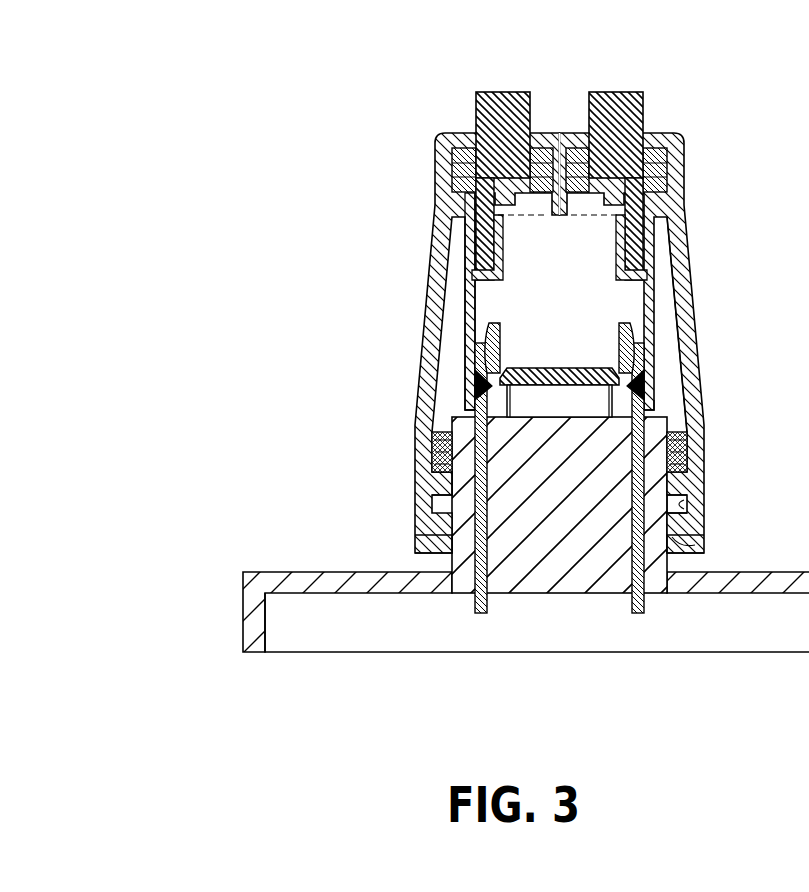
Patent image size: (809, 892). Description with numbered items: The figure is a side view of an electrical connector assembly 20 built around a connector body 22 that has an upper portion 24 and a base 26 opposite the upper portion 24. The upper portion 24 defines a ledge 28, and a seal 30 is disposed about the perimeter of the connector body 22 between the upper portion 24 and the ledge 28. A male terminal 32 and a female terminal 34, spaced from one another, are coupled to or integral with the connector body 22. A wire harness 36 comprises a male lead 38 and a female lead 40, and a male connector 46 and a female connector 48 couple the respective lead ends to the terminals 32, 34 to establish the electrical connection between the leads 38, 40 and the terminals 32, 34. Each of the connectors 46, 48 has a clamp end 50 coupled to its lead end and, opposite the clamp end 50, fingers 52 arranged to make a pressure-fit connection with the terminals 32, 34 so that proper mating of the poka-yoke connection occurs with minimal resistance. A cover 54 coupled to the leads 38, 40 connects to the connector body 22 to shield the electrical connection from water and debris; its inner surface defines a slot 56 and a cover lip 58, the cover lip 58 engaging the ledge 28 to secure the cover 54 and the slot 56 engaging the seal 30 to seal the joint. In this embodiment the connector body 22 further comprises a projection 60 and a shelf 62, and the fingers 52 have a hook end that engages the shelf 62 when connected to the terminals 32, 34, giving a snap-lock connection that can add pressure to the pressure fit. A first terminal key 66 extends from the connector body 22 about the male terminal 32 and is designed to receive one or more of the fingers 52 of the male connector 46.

The electrical connector assembly 20 is at (160, 117).
The connector body 22 is at (548, 552).
The upper portion 24 is at (670, 457).
The base 26 is at (585, 567).
The ledge 28 is at (440, 532).
The seal 30 is at (440, 462).
The male terminal 32 is at (670, 321).
The female terminal 34 is at (470, 413).
The wire harness 36 is at (633, 96).
The male lead 38 is at (628, 131).
The female lead 40 is at (483, 106).
The male connector 46 is at (668, 285).
The female connector 48 is at (455, 235).
The clamp end 50 is at (440, 200).
The fingers 52 is at (478, 388).
The cover 54 is at (440, 450).
The slot 56 is at (674, 508).
The cover lip 58 is at (692, 545).
The projection 60 is at (540, 370).
The shelf 62 is at (452, 355).
The first terminal key 66 is at (658, 406).